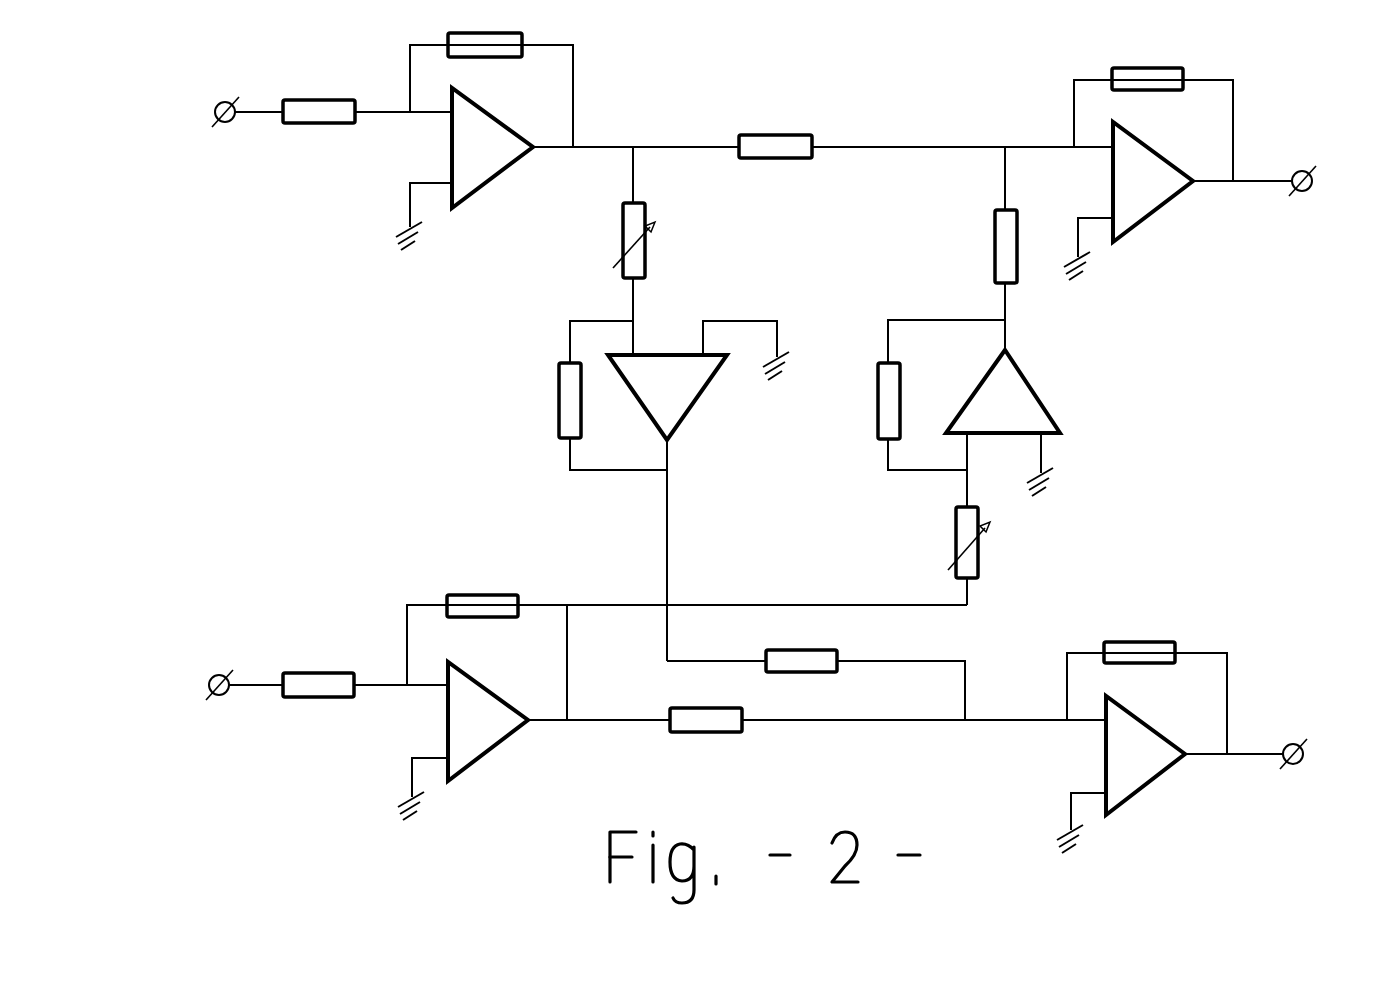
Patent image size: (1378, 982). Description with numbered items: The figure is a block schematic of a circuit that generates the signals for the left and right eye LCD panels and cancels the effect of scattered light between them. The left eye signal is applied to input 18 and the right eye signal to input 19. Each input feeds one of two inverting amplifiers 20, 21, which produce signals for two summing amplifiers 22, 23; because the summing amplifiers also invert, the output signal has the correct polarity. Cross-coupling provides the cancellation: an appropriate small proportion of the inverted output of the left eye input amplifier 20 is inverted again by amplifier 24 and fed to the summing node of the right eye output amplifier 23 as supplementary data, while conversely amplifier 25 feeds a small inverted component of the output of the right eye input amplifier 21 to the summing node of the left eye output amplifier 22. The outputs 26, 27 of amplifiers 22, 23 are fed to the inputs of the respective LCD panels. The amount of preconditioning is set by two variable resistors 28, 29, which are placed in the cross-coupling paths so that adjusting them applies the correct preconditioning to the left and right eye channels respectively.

The input 18 is at (216, 104).
The input 19 is at (214, 675).
The inverting amplifier 20 is at (493, 161).
The inverting amplifier 21 is at (488, 732).
The summing amplifier 22 is at (1155, 192).
The summing amplifier 23 is at (1147, 766).
The amplifier 24 is at (682, 405).
The amplifier 25 is at (1020, 418).
The output 26 is at (1306, 170).
The output 27 is at (1298, 744).
The variable resistor 28 is at (978, 543).
The variable resistor 29 is at (623, 237).